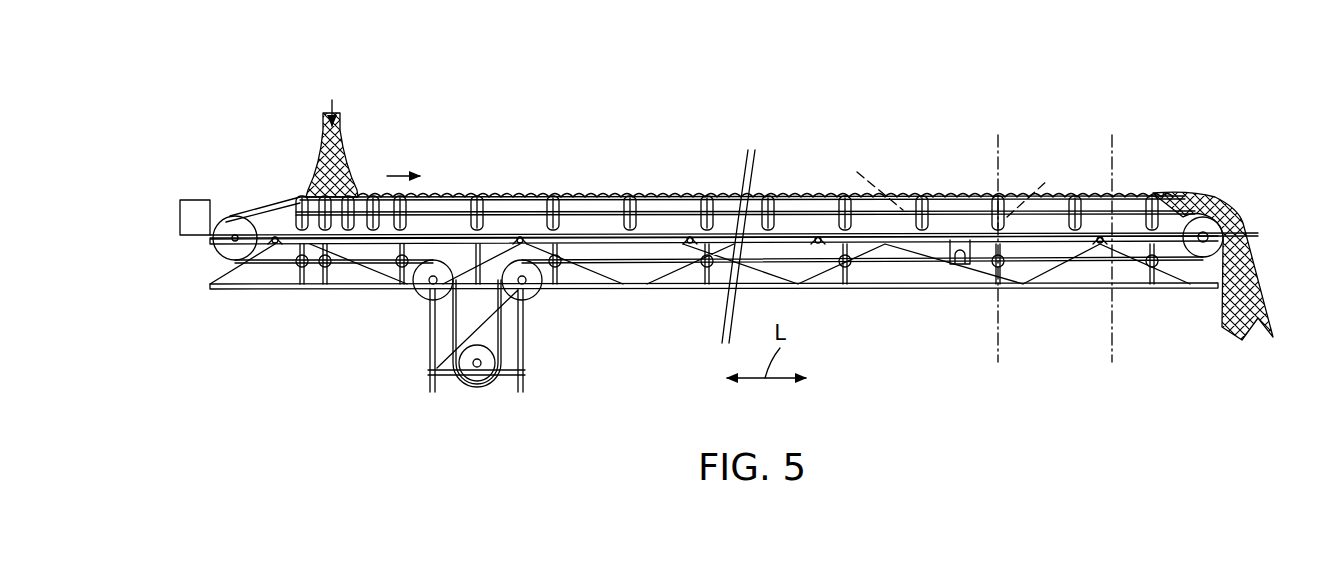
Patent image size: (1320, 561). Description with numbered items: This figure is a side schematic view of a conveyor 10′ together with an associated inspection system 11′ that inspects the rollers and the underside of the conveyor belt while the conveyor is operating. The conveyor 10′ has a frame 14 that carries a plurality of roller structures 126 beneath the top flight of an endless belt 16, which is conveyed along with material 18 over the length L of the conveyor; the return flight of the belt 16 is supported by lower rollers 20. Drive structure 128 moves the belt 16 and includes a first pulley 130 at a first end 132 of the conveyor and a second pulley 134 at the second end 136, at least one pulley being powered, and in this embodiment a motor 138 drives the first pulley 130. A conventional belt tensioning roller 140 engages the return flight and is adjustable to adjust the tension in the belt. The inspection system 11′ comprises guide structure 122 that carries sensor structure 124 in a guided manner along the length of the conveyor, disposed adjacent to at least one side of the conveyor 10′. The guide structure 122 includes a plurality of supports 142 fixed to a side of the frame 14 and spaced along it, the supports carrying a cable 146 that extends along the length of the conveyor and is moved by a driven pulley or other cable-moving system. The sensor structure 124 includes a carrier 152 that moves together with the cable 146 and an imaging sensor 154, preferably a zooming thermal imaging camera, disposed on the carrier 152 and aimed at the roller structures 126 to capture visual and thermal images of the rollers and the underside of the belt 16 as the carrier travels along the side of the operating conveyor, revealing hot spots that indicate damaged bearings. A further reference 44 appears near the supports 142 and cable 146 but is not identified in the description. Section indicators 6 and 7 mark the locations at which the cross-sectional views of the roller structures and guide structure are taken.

The conveyor 10′ is at (876, 95).
The inspection system 11′ is at (966, 228).
The frame 14 is at (1137, 288).
The endless belt 16 is at (290, 200).
The material 18 is at (342, 182).
The lower rollers 20 is at (298, 266).
The belt support 44 is at (700, 246).
The guide structure 122 is at (355, 292).
The sensor structure 124 is at (931, 267).
The roller structures 126 is at (545, 214).
The drive structure 128 is at (176, 211).
The first pulley 130 is at (228, 258).
The first end 132 is at (238, 222).
The second pulley 134 is at (1208, 250).
The second end 136 is at (1190, 222).
The motor 138 is at (178, 227).
The belt tensioning roller 140 is at (478, 372).
The supports 142 is at (817, 237).
The cable 146 is at (672, 262).
The carrier 152 is at (957, 266).
The imaging sensor 154 is at (966, 266).
The section line 6- 6 is at (1003, 137).
The section line 7- 7 is at (1117, 137).